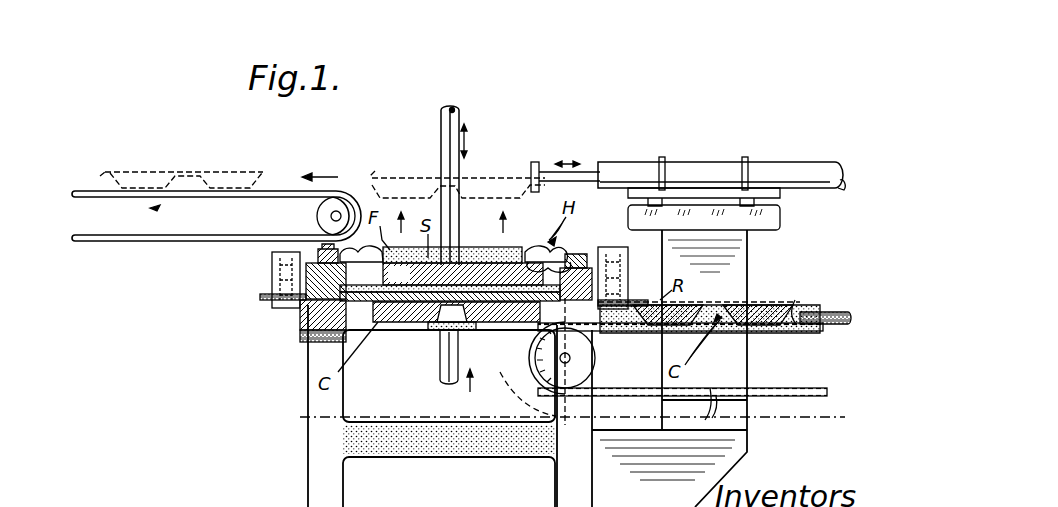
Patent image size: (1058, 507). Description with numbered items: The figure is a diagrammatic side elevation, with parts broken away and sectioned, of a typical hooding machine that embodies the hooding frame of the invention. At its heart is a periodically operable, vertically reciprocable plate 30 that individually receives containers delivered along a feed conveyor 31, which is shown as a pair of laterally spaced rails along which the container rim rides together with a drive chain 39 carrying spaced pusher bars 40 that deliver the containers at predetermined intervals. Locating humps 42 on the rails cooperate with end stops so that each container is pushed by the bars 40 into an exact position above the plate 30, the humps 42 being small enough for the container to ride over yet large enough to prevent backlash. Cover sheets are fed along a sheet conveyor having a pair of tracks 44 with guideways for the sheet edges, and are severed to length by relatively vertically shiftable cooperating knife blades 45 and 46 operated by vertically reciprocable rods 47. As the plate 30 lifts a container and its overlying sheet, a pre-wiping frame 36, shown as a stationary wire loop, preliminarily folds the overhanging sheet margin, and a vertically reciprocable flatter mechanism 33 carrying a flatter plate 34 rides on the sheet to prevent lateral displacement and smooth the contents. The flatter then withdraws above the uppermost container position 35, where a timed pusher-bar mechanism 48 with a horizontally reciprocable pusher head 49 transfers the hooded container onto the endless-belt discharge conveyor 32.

The vertically reciprocable plate 30 is at (395, 330).
The feed conveyor 31 is at (816, 313).
The discharge conveyor 32 is at (205, 220).
The flatter mechanism 33 is at (460, 113).
The flatter plate 34 is at (473, 258).
The uppermost position of the container 35 is at (468, 179).
The pre-wiping frame 36 is at (565, 262).
The drive chain 39 is at (770, 332).
The pusher bars 40 is at (795, 304).
The locating humps 42 is at (596, 316).
The tracks 44 is at (332, 322).
The knife blade 45 is at (300, 287).
The knife blade 46 is at (300, 312).
The vertically reciprocable rods 47 is at (310, 320).
The pusher-bar mechanism 48 is at (626, 164).
The pusher head 49 is at (545, 172).